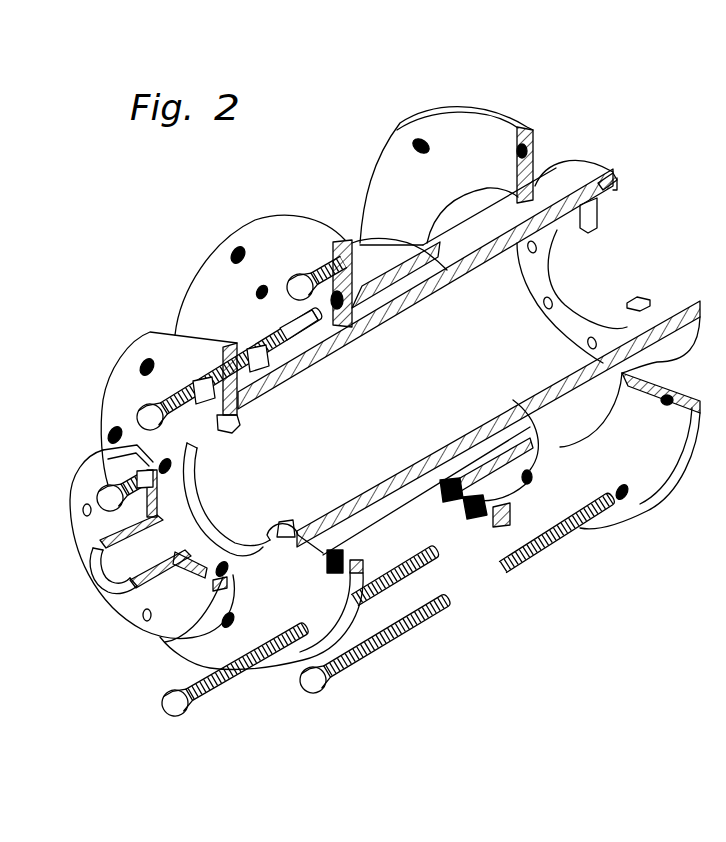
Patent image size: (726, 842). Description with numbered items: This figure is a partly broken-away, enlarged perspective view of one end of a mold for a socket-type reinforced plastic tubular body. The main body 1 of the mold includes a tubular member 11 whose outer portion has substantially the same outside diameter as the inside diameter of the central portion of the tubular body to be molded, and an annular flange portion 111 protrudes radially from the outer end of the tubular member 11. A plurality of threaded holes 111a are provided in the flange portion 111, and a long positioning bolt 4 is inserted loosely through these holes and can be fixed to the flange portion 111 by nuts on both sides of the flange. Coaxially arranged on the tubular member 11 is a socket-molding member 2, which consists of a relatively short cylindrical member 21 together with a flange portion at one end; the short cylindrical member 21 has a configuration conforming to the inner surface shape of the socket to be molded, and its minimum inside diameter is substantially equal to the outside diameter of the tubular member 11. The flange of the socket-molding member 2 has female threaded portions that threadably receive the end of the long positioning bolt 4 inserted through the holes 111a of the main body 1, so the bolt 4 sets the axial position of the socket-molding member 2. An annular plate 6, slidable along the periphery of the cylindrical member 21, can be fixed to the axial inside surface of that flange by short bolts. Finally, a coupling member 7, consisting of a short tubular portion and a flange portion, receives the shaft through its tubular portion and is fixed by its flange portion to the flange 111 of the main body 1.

The main body of a mold 1 is at (556, 126).
The tubular member 11 is at (583, 160).
The annular flange portion 111 is at (160, 343).
The threaded holes 111a is at (112, 436).
The socket-molding member 2 is at (346, 240).
The short cylindrical member 21 is at (385, 255).
The long positioning bolt 4 is at (150, 410).
The annular plate 6 is at (458, 122).
The coupling member 7 is at (78, 502).